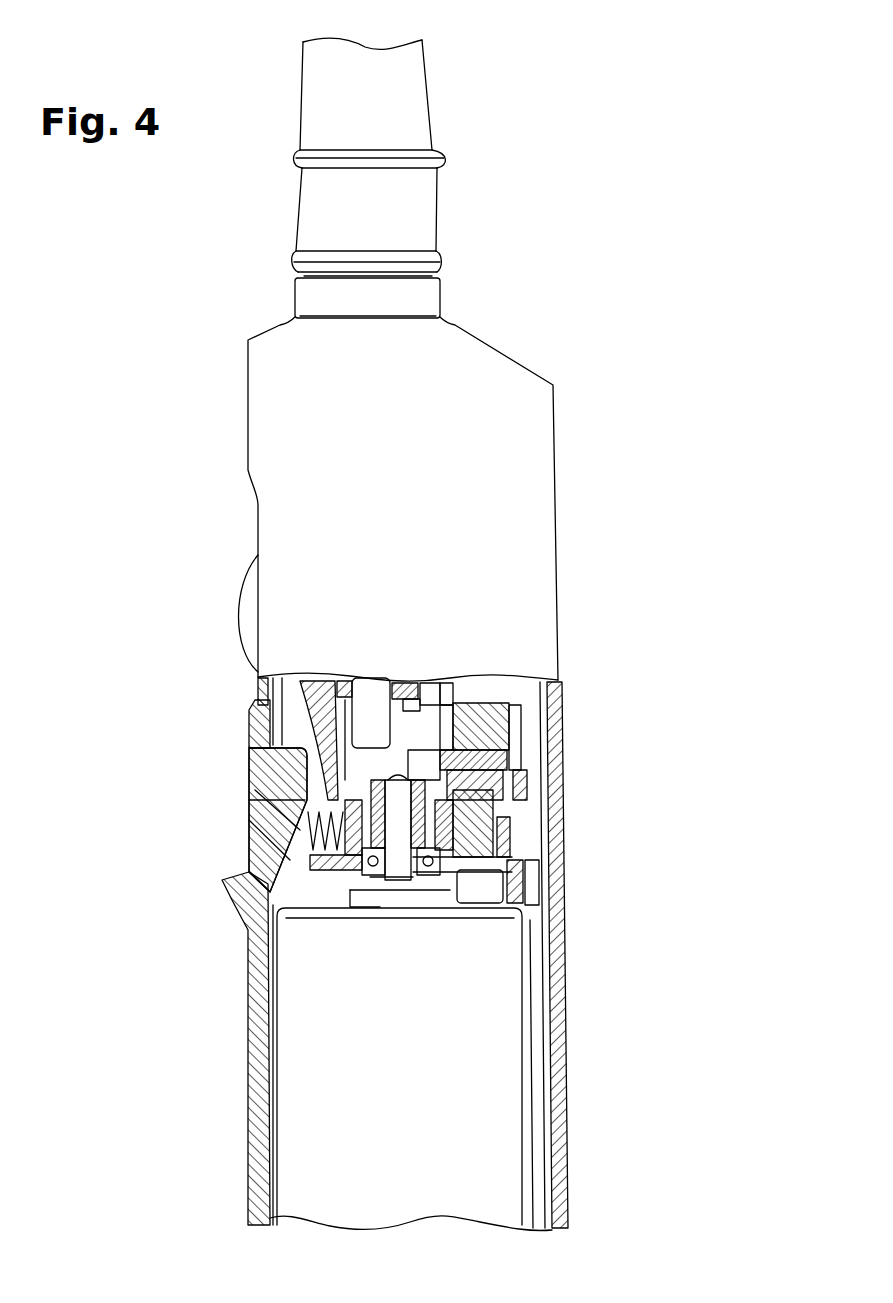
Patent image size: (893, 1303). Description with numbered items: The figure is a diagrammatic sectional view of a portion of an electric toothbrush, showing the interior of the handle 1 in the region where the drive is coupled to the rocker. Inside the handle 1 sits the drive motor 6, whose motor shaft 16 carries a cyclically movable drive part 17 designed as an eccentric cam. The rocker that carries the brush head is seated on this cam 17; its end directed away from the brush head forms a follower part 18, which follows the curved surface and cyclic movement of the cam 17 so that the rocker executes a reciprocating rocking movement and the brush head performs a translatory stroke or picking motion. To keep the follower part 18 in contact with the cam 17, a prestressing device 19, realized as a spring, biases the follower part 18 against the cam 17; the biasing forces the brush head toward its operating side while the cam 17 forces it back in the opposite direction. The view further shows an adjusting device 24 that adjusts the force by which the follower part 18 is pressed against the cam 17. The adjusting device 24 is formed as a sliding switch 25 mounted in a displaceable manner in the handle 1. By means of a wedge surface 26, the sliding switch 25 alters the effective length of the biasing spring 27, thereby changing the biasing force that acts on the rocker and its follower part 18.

The handle 1 is at (580, 548).
The drive motor 6 is at (487, 1018).
The motor shaft 16 is at (400, 812).
The drive part (cam) 17 is at (368, 880).
The follower part 18 is at (345, 790).
The prestressing device 19 is at (300, 816).
The adjusting device 24 is at (220, 921).
The sliding switch 25 is at (270, 832).
The wedge surface 26 is at (249, 762).
The biasing spring 27 is at (307, 850).